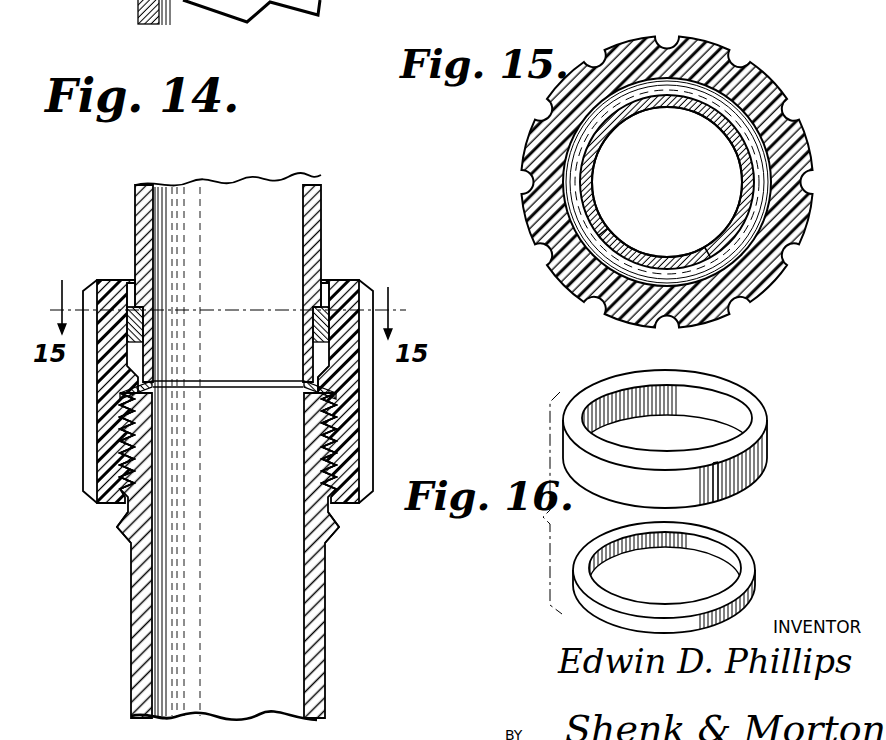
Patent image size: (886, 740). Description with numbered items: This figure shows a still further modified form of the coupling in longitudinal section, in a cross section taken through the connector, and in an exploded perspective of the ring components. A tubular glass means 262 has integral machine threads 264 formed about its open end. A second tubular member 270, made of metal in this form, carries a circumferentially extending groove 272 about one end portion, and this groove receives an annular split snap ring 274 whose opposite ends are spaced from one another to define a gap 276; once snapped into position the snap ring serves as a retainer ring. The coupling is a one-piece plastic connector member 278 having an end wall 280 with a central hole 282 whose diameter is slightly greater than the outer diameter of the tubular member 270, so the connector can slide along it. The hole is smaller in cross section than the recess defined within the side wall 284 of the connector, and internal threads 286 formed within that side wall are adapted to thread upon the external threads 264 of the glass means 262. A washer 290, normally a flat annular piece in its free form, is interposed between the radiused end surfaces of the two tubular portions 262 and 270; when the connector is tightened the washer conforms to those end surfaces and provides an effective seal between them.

In FIG. 14, the tubular glass means 262 is at (326, 650).
In FIG. 14, the machine threads 264 is at (340, 526).
In FIG. 14, the tubular member 270 is at (326, 221).
In FIG. 15, the tubular member 270 is at (648, 111).
In FIG. 14, the groove 272 is at (315, 332).
In FIG. 14, the snap ring 274 is at (141, 325).
In FIG. 15, the snap ring 274 is at (608, 233).
In FIG. 16, the snap ring 274 is at (755, 411).
In FIG. 16, the gap 276 is at (722, 479).
In FIG. 14, the connector member 278 is at (390, 401).
In FIG. 15, the connector member 278 is at (788, 70).
In FIG. 14, the end wall 280 is at (331, 279).
In FIG. 14, the central hole 282 is at (137, 292).
In FIG. 14, the side wall 284 is at (357, 430).
In FIG. 14, the internal threads 286 is at (143, 462).
In FIG. 14, the washer 290 is at (170, 387).
In FIG. 16, the washer 290 is at (743, 555).